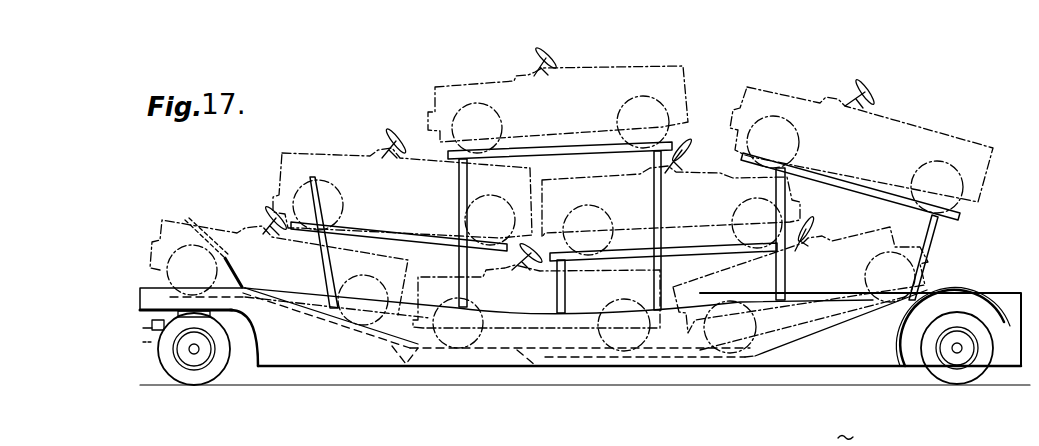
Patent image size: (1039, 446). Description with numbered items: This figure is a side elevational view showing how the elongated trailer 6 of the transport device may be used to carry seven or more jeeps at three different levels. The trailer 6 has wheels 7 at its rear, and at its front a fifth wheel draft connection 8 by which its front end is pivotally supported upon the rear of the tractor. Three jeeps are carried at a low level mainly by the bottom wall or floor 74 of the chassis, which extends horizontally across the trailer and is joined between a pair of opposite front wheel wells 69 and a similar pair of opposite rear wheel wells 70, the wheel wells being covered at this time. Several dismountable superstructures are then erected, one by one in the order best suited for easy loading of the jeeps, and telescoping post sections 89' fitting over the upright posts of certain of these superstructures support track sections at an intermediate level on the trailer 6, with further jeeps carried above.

The elongated trailer 6 is at (614, 355).
The wheels 7 is at (968, 373).
The fifth wheel draft connection 8 is at (172, 298).
The front wheel wells 69 is at (398, 352).
The bottom wall 74 is at (563, 350).
The rear wheel wells 70 is at (752, 358).
The telescoping post sections 89' is at (624, 232).